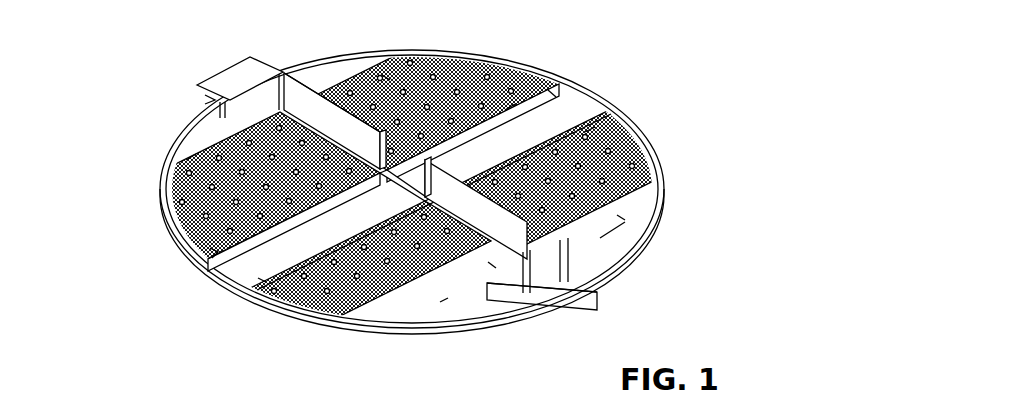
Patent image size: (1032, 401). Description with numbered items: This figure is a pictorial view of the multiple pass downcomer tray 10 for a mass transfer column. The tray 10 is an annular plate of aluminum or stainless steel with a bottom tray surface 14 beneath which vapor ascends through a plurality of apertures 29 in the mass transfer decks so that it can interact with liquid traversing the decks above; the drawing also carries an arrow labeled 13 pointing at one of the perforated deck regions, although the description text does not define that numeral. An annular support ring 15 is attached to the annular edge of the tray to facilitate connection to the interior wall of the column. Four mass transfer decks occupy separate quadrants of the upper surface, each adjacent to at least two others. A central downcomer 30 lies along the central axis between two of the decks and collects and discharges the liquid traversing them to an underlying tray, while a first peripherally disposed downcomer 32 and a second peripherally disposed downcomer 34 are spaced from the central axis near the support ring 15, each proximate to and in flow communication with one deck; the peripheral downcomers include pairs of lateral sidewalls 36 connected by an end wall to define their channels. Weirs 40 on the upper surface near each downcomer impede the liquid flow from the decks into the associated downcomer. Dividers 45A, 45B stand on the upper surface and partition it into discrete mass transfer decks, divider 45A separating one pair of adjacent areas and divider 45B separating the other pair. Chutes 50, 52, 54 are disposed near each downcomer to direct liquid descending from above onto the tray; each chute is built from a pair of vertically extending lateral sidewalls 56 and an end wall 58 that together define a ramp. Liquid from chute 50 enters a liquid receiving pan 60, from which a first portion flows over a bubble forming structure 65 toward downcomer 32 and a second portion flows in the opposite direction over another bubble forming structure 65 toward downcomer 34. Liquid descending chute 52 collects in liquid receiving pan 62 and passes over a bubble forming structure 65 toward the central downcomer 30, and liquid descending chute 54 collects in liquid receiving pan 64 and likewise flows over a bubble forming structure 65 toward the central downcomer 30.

The multiple pass downcomer tray 10 is at (88, 66).
The tray deck 13 is at (441, 48).
The bottom tray surface 14 is at (336, 356).
The annular support ring 15 is at (630, 250).
The apertures 29 is at (187, 240).
The central downcomer 30 is at (531, 140).
The first peripherally disposed downcomer 32 is at (511, 292).
The second peripherally disposed downcomer 34 is at (190, 148).
The lateral sidewalls 36 is at (611, 163).
The weirs 40 is at (190, 158).
The divider 45A is at (460, 215).
The divider 45B is at (312, 127).
The chute 50 is at (450, 140).
The chute 52 is at (517, 243).
The chute 54 is at (250, 95).
The lateral sidewalls 56 is at (222, 80).
The end wall 58 is at (213, 97).
The liquid receiving pan 60 is at (306, 237).
The liquid receiving pan 62 is at (613, 240).
The liquid receiving pan 64 is at (330, 80).
The bubble forming structure 65 is at (217, 250).